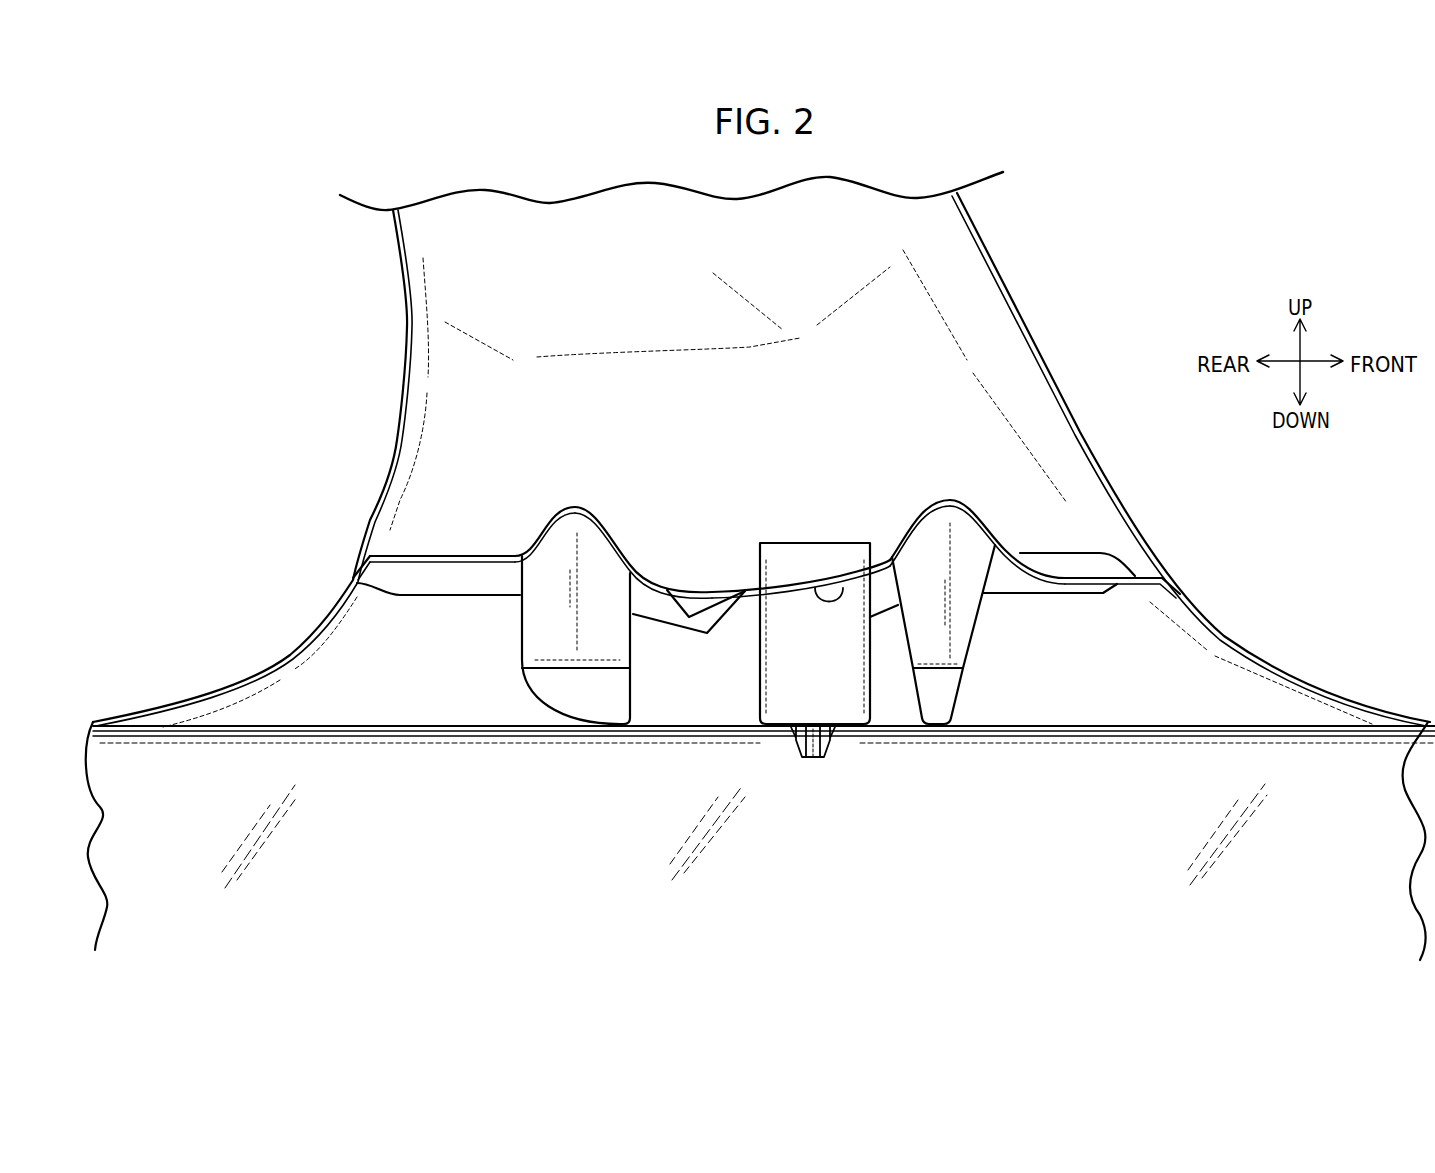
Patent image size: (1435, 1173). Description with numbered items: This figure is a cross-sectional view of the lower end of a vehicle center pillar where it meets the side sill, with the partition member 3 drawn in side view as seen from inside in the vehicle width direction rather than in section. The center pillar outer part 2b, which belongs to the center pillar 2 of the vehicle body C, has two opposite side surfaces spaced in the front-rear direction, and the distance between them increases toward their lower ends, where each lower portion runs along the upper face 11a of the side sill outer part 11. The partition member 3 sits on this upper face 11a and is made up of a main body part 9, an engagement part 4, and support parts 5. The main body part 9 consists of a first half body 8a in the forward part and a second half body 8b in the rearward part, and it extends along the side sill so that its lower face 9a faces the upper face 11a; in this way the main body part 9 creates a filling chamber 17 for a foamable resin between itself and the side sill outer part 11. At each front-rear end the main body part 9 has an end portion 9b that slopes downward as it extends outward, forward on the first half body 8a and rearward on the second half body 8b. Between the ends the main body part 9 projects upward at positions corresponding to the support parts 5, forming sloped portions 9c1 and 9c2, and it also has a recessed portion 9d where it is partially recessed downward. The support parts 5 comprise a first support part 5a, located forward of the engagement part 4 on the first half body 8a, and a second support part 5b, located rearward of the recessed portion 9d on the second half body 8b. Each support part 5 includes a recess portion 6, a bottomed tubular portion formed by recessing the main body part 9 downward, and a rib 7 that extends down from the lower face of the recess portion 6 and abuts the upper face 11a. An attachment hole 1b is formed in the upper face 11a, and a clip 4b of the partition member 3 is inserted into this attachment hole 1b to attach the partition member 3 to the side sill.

The vehicle cabin C is at (1177, 259).
The side wall 2 is at (758, 576).
The center pillar outer part 2b is at (988, 257).
The partition member 3 is at (897, 458).
The engagement part 4 is at (790, 623).
The clip 4b is at (815, 760).
The attachment hole 1b is at (814, 722).
The support parts 5 is at (786, 513).
The first support part 5a is at (955, 506).
The second support part 5b is at (609, 513).
The recess portion 6 is at (542, 621).
The rib 7 is at (560, 688).
The first half body 8a is at (1103, 575).
The second half body 8b is at (457, 553).
The main body part 9 is at (693, 587).
The lower face 9a is at (827, 600).
The end portions 9b is at (369, 588).
The sloped portion 9c1 is at (999, 506).
The sloped portion 9c2 is at (529, 511).
The recessed portion 9d is at (688, 607).
The side sill outer part 11 is at (764, 801).
The upper face 11a is at (1088, 722).
The filling chamber 17 is at (1095, 683).